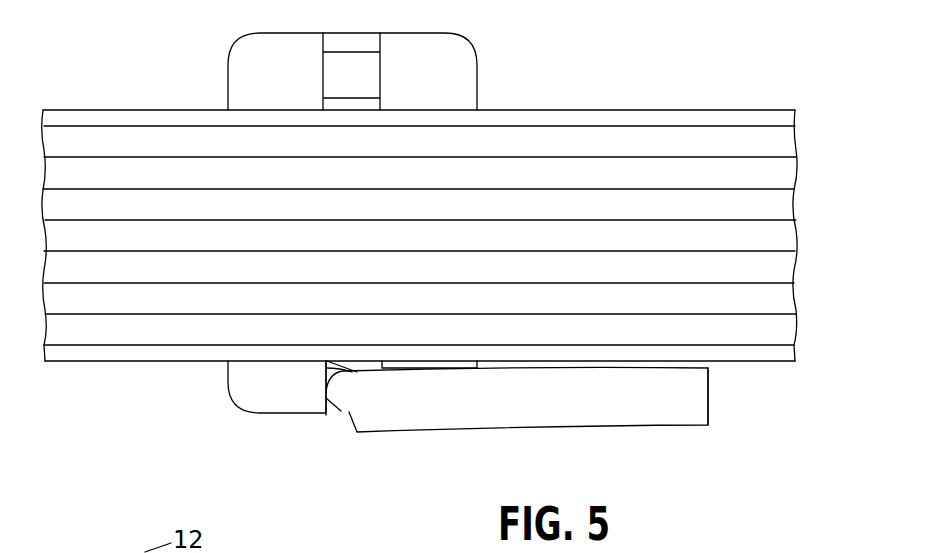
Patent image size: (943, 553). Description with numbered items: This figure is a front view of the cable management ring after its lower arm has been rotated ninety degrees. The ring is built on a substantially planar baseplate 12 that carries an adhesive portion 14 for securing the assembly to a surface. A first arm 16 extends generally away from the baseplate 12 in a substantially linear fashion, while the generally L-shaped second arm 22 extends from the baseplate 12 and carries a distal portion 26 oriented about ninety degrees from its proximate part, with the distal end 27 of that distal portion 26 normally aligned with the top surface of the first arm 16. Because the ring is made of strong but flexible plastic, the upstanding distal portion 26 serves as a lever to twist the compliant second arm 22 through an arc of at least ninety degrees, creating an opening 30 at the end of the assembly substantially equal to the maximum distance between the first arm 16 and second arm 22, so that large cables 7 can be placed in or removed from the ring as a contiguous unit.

The cables 7 is at (742, 118).
The baseplate 12 is at (462, 70).
The first arm 16 is at (370, 68).
The opening 30 is at (371, 240).
The second arm 22 is at (355, 405).
The distal portion 26 is at (558, 403).
The distal end 27 is at (708, 398).
The adhesive portion 14 is at (90, 552).